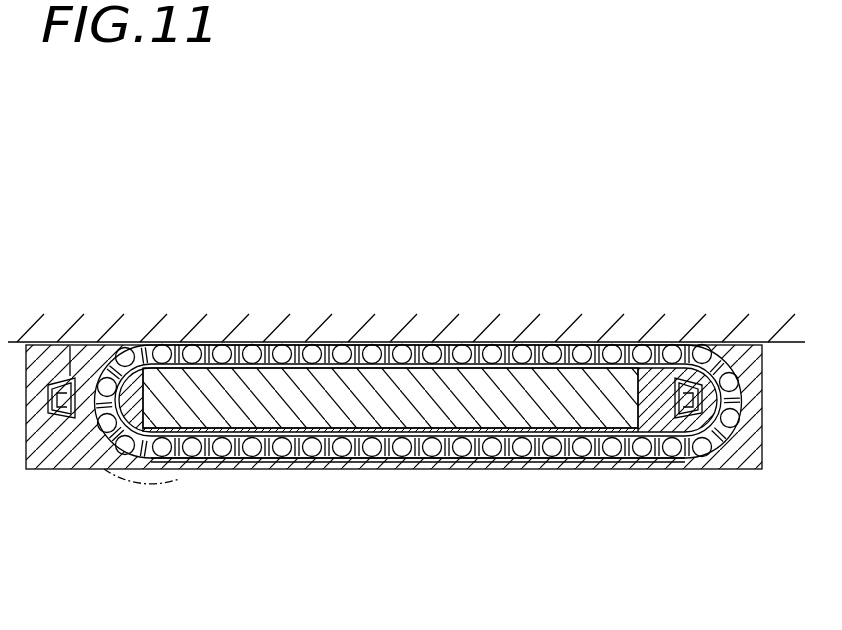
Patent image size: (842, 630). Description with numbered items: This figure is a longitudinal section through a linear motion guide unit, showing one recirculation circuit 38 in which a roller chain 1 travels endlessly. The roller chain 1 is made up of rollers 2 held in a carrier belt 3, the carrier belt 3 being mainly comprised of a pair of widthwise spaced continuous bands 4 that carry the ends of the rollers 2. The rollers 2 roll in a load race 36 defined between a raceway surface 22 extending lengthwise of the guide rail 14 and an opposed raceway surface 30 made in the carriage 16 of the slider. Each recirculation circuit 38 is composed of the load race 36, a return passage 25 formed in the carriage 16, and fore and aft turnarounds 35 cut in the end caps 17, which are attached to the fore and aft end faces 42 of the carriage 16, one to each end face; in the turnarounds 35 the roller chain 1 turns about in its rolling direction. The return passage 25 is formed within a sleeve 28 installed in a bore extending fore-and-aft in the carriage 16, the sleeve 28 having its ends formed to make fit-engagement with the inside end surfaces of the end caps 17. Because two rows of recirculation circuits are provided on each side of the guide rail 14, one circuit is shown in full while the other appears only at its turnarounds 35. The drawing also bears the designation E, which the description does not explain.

The roller chain 1 is at (484, 344).
The roller 2 is at (462, 346).
The carrier belt 3 is at (655, 348).
The continuous band 4 is at (216, 350).
The guide rail 14 is at (428, 333).
The carriage 16 is at (540, 397).
The end cap 17 is at (54, 445).
The raceway surface 22 is at (370, 342).
The return passage 25 is at (417, 460).
The sleeve 28 is at (367, 463).
The raceway surface 30 is at (304, 348).
The turnaround 35 is at (71, 376).
The load race 36 is at (256, 347).
The recirculation circuit 38 is at (616, 350).
The end face of the carriage 42 is at (118, 352).
The envelope arc E is at (113, 478).